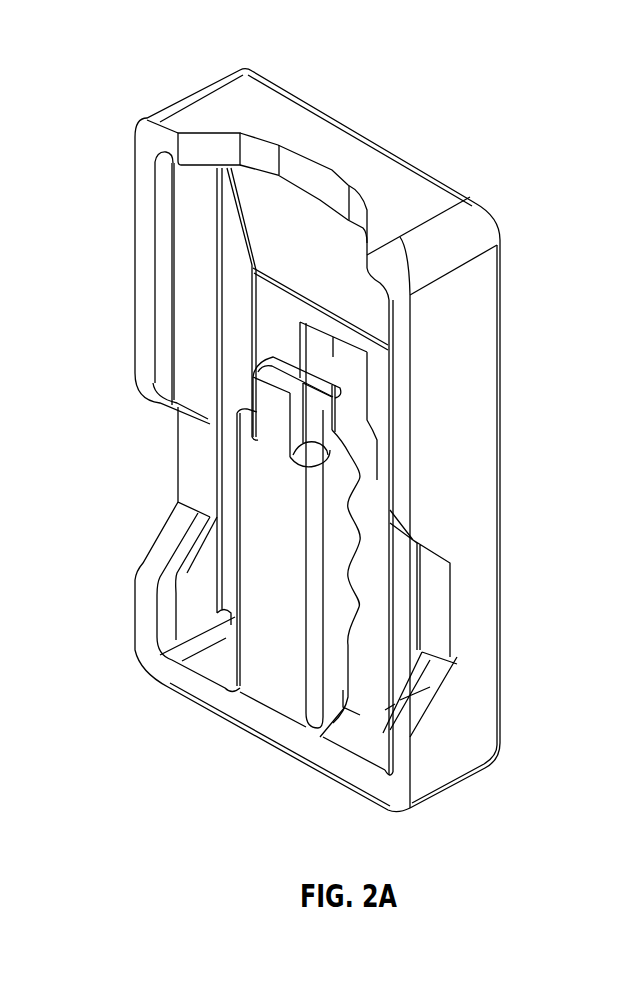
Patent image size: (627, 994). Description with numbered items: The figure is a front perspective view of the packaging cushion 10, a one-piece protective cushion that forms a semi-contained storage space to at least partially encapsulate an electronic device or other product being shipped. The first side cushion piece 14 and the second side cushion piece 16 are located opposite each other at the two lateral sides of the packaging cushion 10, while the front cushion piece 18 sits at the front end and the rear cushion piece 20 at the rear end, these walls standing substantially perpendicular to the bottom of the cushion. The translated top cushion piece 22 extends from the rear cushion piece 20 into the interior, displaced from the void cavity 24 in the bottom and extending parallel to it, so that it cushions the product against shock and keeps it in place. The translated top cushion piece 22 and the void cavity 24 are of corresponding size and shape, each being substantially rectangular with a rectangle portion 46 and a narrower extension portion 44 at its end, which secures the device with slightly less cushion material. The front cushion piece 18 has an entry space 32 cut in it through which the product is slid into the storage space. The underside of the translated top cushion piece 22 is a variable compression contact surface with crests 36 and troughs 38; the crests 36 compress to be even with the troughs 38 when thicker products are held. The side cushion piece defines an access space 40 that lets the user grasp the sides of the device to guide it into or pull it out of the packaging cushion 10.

The packaging cushion 10 is at (107, 72).
The first side cushion piece 14 is at (483, 500).
The second side cushion piece 16 is at (183, 240).
The front cushion piece 18 is at (303, 120).
The rear cushion piece 20 is at (215, 650).
The translated top cushion piece 22 is at (307, 700).
The void cavity 24 is at (348, 385).
The entry space 32 is at (293, 208).
The crests 36 is at (365, 508).
The troughs 38 is at (355, 533).
The access space 40 is at (410, 588).
The extension portion 44 is at (256, 400).
The rectangle portion 46 is at (252, 635).